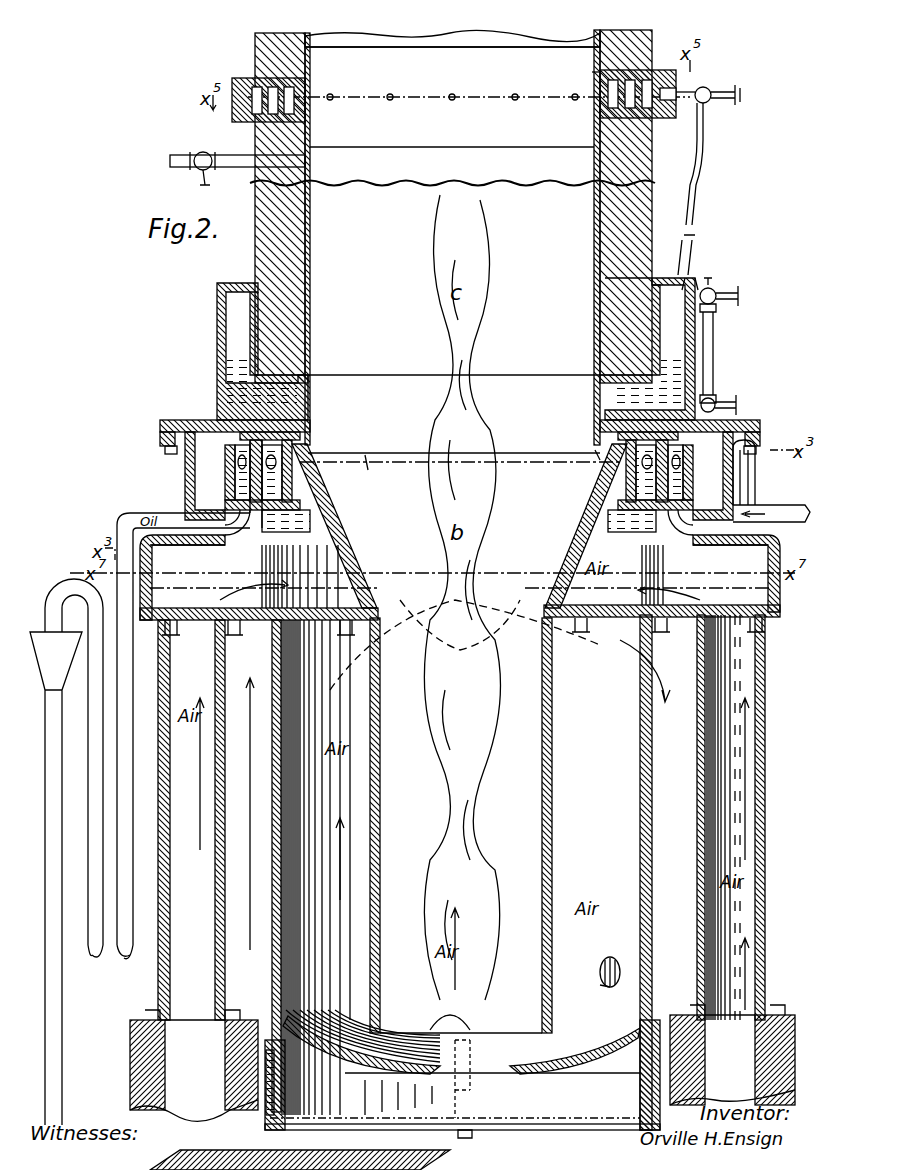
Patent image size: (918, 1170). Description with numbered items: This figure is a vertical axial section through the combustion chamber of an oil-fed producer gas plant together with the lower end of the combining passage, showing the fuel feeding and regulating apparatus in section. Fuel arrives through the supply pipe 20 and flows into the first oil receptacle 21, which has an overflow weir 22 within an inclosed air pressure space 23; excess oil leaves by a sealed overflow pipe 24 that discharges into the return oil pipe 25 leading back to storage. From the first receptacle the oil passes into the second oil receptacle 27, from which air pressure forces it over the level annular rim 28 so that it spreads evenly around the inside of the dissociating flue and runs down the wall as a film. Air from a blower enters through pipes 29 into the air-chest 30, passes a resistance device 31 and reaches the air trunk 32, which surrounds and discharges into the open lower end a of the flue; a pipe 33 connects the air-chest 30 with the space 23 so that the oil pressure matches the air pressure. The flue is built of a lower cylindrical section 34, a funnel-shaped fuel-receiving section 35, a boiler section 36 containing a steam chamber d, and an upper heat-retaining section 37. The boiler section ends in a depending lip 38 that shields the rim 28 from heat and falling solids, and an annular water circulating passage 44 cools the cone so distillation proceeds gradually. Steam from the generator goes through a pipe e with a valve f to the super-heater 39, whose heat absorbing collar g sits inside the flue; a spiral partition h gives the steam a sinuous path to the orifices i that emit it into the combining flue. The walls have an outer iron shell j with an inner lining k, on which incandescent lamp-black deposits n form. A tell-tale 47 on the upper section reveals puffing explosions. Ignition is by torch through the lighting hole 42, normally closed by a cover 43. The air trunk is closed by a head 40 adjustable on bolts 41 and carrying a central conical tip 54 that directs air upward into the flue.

The supply pipe 20 is at (775, 512).
The first oil receptacle 21 is at (460, 437).
The overflow weir 22 is at (459, 475).
The inclosed air pressure space 23 is at (456, 492).
The sealed overflow pipe 24 is at (113, 530).
The return oil pipe 25 is at (63, 1000).
The second oil receptacle 27 is at (310, 463).
The level annular rim 28 is at (310, 447).
The air pipes 29 is at (461, 865).
The air-chest 30 is at (432, 577).
The resistance device 31 is at (465, 645).
The air trunk 32 is at (580, 870).
The pipe 33 is at (760, 462).
The lower cylindrical section 34 is at (555, 775).
The funnel-shaped fuel-receiving section 35 is at (340, 560).
The boiler section 36 is at (310, 402).
The upper section 37 is at (605, 295).
The depending lip 38 is at (365, 455).
The super-heater 39 is at (600, 70).
The head 40 is at (570, 1068).
The bolts 41 is at (322, 1140).
The lighting hole 42 is at (602, 962).
The cover 43 is at (606, 988).
The annular water circulating passage 44 is at (262, 522).
The tell-tale 47 is at (180, 155).
The central conical tip 54 is at (455, 1010).
The dissociating flue lower portion a is at (461, 825).
The chamber d is at (240, 385).
The steam pipe e is at (700, 158).
The valve f is at (708, 88).
The heat absorbing collar g is at (469, 122).
The spiral partition h is at (290, 108).
The orifices i is at (330, 93).
The outer iron shell j is at (255, 42).
The inner lining k is at (640, 42).
The deposits n is at (597, 160).
The top plate z is at (452, 37).